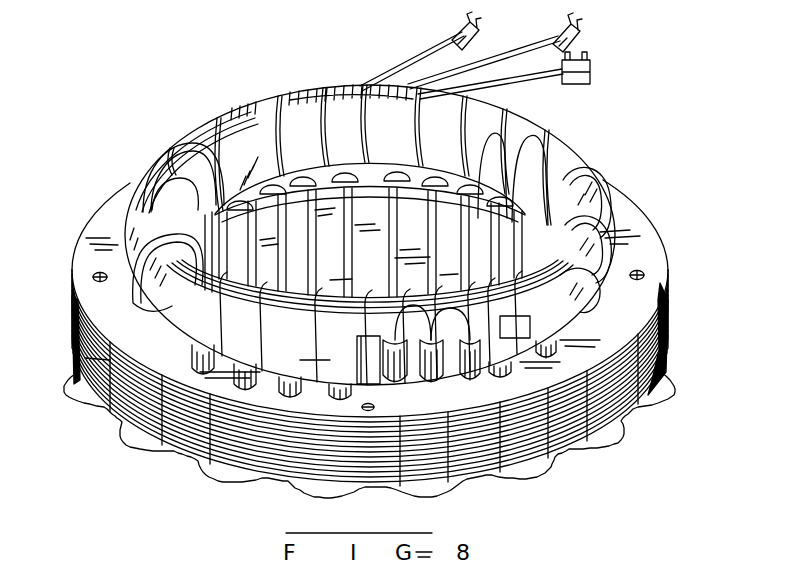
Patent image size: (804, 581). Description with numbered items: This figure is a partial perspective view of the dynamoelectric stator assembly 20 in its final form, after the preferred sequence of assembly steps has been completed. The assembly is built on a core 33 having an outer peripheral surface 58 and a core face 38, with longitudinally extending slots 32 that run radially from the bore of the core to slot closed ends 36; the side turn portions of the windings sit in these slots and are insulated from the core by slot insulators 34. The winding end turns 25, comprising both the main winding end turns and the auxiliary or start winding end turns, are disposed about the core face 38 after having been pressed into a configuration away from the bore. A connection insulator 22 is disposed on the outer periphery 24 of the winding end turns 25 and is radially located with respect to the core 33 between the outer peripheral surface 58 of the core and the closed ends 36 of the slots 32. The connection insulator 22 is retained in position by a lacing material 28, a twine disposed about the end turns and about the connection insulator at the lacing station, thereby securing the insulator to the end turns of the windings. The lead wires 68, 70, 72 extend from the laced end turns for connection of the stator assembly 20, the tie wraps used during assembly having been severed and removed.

The stator assembly 20 is at (606, 137).
The connection insulator 22 is at (466, 372).
The outer periphery 24 is at (515, 326).
The winding end turns 25 is at (595, 200).
The lacing material 28 is at (272, 373).
The slots 32 is at (360, 388).
The core 33 is at (665, 298).
The slot insulators 34 is at (560, 346).
The slot closed ends 36 is at (408, 378).
The core face 38 is at (88, 258).
The outer peripheral surface 58 is at (630, 396).
The lead wire 68 is at (444, 46).
The lead wire 70 is at (537, 48).
The lead wire 72 is at (543, 76).